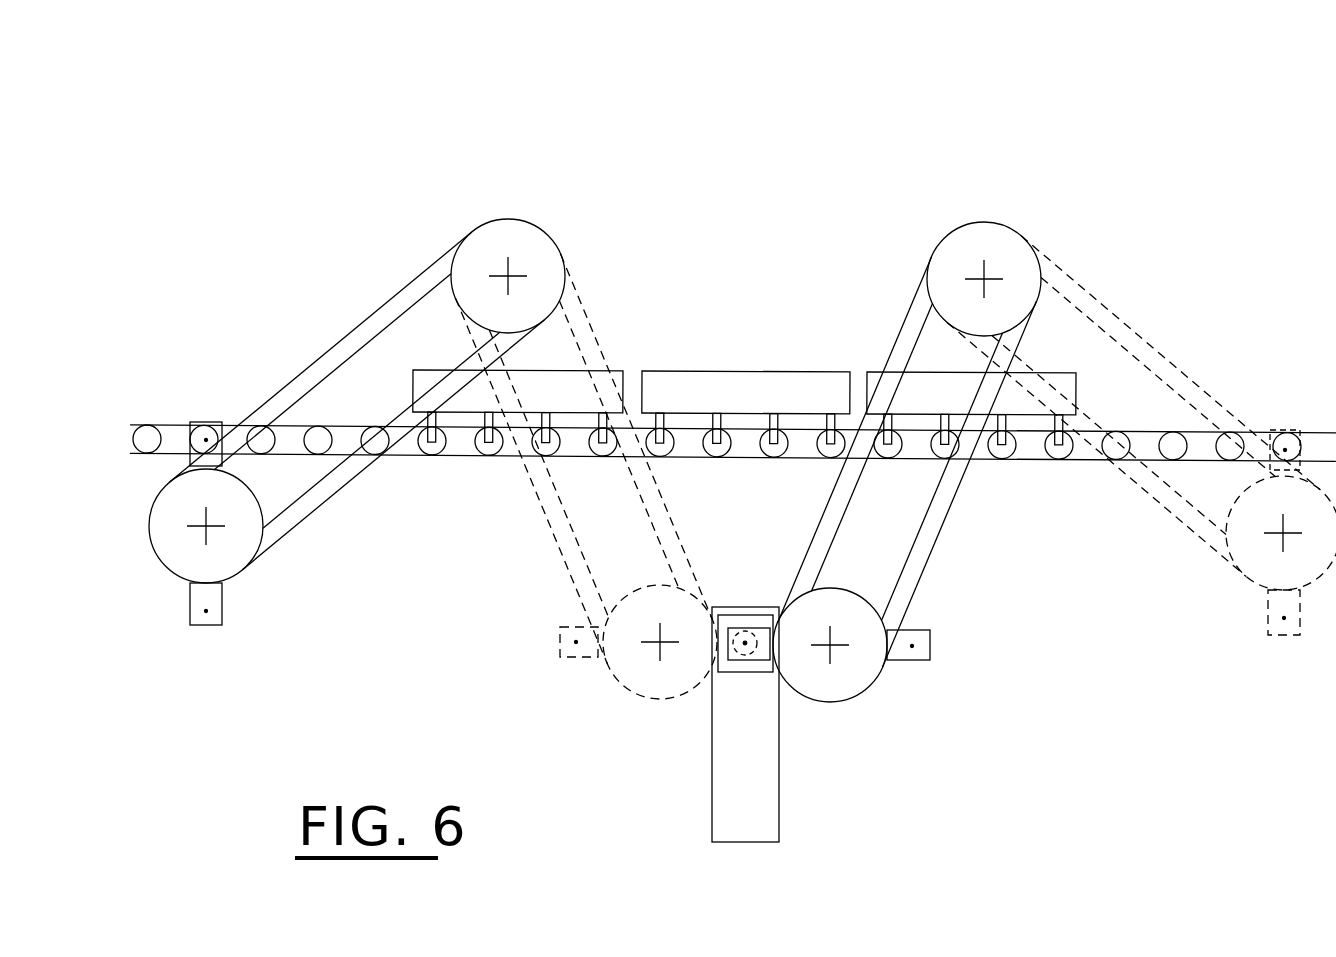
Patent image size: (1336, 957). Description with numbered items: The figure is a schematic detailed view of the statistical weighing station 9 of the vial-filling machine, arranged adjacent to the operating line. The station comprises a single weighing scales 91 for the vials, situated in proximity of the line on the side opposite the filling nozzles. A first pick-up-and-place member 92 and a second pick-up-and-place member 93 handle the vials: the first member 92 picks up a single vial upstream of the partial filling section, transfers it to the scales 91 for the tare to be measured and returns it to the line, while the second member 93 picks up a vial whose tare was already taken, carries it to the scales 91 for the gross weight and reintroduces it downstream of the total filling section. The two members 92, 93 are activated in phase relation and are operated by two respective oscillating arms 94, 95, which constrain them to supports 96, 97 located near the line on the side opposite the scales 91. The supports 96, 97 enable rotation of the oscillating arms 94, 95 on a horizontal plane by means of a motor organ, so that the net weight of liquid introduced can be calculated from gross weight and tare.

The statistical weighing station 9 is at (712, 148).
The weighing scales 91 is at (750, 596).
The first pick-up-and-place member 92 is at (176, 547).
The second pick-up-and-place member 93 is at (851, 680).
The first oscillating arm 94 is at (371, 320).
The second oscillating arm 95 is at (914, 320).
The first support 96 is at (500, 235).
The second support 97 is at (985, 245).